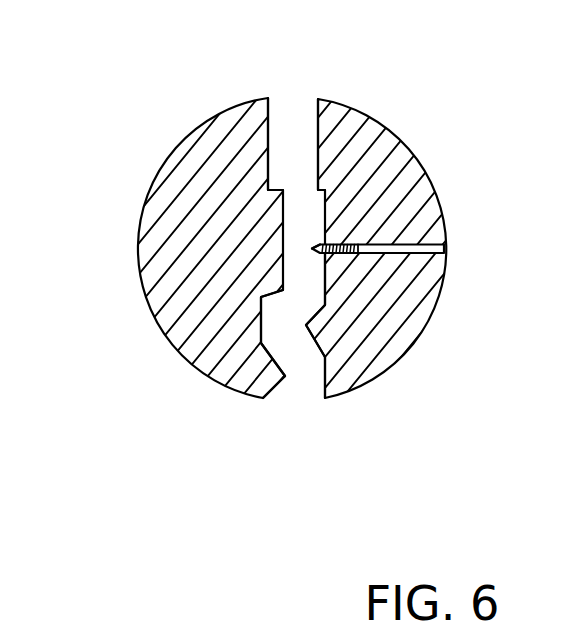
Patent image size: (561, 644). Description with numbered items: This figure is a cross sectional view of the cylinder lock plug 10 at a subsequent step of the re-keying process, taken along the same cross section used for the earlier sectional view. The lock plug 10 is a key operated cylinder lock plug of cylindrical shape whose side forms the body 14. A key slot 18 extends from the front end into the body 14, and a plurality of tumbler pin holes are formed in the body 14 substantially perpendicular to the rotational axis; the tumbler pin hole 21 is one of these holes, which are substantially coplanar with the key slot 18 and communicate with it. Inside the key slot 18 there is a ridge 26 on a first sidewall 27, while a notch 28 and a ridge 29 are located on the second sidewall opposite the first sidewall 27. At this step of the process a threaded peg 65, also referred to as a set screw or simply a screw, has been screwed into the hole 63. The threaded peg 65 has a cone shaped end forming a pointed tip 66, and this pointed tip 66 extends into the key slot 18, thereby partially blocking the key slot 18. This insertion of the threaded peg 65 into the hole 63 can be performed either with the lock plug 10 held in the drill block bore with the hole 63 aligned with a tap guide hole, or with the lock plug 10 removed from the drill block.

The cylinder lock plug 10 is at (358, 542).
The body 14 is at (238, 322).
The key slot 18 is at (386, 405).
The tumbler pin hole 21 is at (287, 100).
The ridge 26 is at (388, 355).
The first sidewall 27 is at (332, 322).
The notch 28 is at (195, 362).
The ridge 29 is at (250, 392).
The hole 63 is at (411, 212).
The threaded peg 65 is at (425, 312).
The pointed tip 66 is at (186, 295).